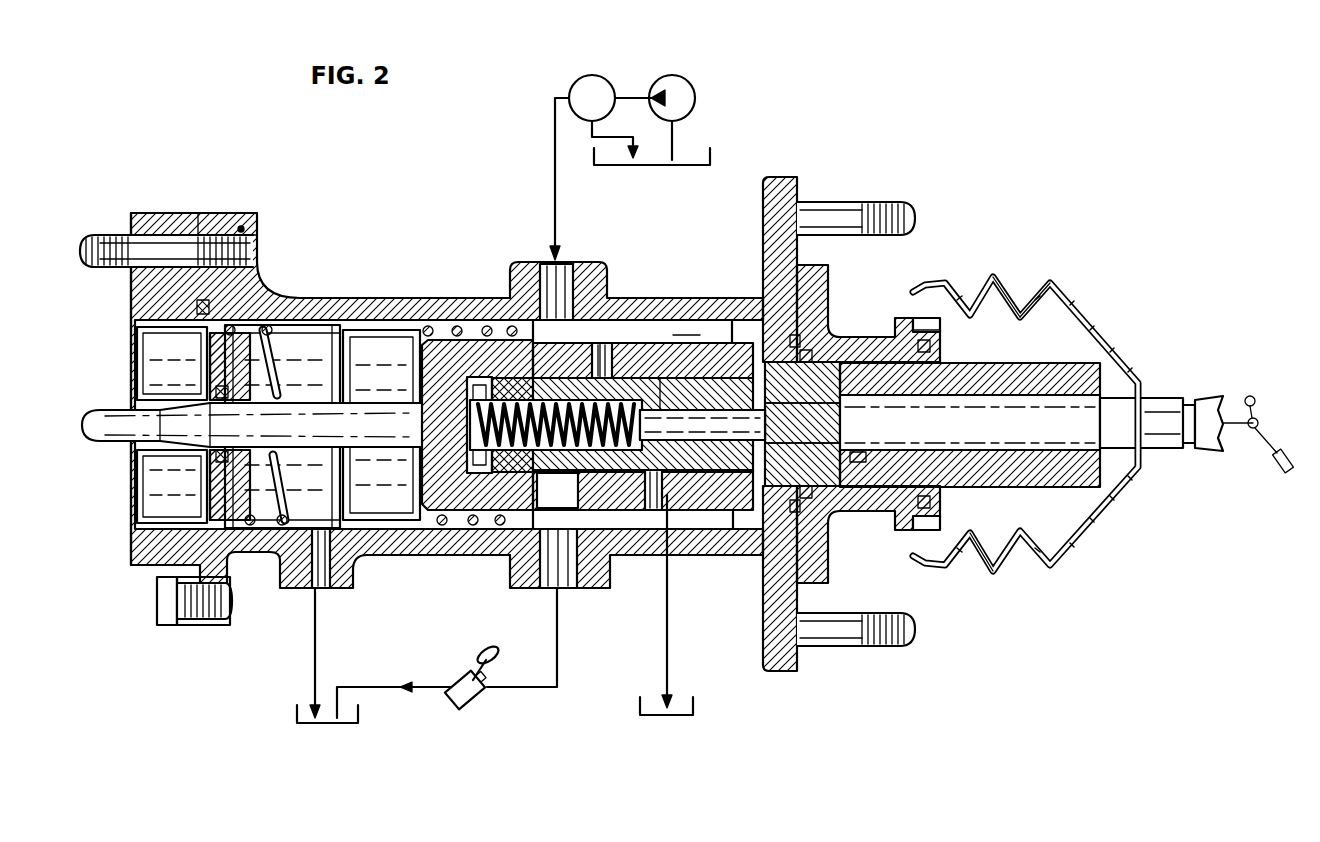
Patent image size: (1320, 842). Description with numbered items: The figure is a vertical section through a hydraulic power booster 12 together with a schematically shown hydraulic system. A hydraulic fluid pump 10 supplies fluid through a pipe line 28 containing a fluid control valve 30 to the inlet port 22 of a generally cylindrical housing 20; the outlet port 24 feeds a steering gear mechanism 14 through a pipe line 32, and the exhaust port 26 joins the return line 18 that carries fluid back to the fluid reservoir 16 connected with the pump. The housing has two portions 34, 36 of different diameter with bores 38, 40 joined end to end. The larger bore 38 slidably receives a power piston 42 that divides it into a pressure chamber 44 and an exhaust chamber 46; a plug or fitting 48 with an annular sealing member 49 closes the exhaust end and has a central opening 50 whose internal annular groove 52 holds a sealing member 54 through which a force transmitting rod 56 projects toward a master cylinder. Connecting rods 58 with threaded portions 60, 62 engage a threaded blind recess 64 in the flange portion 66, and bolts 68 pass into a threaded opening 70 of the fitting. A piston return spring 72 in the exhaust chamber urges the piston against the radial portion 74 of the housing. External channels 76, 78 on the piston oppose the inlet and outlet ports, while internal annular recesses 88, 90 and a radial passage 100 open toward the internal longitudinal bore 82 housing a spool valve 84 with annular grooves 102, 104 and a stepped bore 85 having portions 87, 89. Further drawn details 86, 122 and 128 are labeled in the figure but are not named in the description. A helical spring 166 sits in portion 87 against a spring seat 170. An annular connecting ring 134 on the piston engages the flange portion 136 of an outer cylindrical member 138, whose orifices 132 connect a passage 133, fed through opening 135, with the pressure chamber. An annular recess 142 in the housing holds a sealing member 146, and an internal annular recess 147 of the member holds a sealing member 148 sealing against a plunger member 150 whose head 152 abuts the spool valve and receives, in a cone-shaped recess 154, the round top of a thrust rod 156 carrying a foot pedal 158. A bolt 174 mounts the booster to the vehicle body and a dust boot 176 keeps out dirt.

The hydraulic fluid pump 10 is at (695, 90).
The power booster 12 is at (419, 292).
The steering gear mechanism 14 is at (474, 693).
The fluid reservoir 16 is at (645, 165).
The return line 18 is at (321, 617).
The housing 20 is at (645, 376).
The inlet port 22 is at (576, 270).
The outlet port 24 is at (555, 588).
The exhaust port 26 is at (316, 578).
The pipe line 28 is at (555, 186).
The fluid control valve 30 is at (598, 77).
The pipe line 32 is at (557, 673).
The housing portion 34 is at (483, 297).
The housing portion 36 is at (863, 362).
The bore 38 is at (394, 325).
The bore 40 is at (917, 357).
The power piston 42 is at (700, 348).
The pressure chamber 44 is at (852, 337).
The exhaust chamber 46 is at (313, 345).
The plug or fitting 48 is at (135, 312).
The annular sealing member 49 is at (210, 305).
The central opening 50 is at (203, 435).
The internal annular groove 52 is at (218, 390).
The annular sealing member 54 is at (216, 453).
The force transmitting rod 56 is at (307, 415).
The connecting rods 58 is at (172, 250).
The threaded portion 60 is at (214, 246).
The threaded portion 62 is at (118, 244).
The threaded blind recess 64 is at (244, 228).
The flange portion 66 is at (240, 225).
The bolts 68 is at (160, 602).
The threaded opening 70 is at (205, 626).
The piston return spring 72 is at (278, 474).
The radial portion 74 is at (806, 497).
The external channel 76 is at (603, 330).
The external channel 78 is at (724, 522).
The internal longitudinal bore 82 is at (540, 376).
The spool valve 84 is at (661, 375).
The stepped bore 85 is at (478, 378).
The port 86 is at (557, 490).
The bore portion 87 is at (478, 422).
The annular recess 88 is at (633, 534).
The bore portion 89 is at (673, 337).
The annular recess 90 is at (678, 476).
The radial passage 100 is at (652, 482).
The annular groove 102 is at (518, 542).
The annular groove 104 is at (657, 425).
The port boss 122 is at (602, 590).
The push rod 128 is at (702, 425).
The orifices 132 is at (752, 338).
The passage 133 is at (777, 372).
The annular connecting ring 134 is at (810, 502).
The opening 135 is at (780, 405).
The flange portion 136 is at (763, 576).
The outer cylindrical member 138 is at (1015, 308).
The annular recess 142 is at (942, 320).
The annular sealing member 146 is at (926, 358).
The internal annular recess 147 is at (860, 462).
The annular sealing member 148 is at (920, 398).
The plunger member 150 is at (1000, 482).
The head 152 is at (772, 472).
The cone-shaped recess 154 is at (1017, 362).
The thrust rod 156 is at (1040, 430).
The foot pedal 158 is at (1276, 406).
The helical spring 166 is at (352, 383).
The spring seat 170 is at (478, 446).
The bolt 174 is at (836, 208).
The dust boot 176 is at (1102, 338).